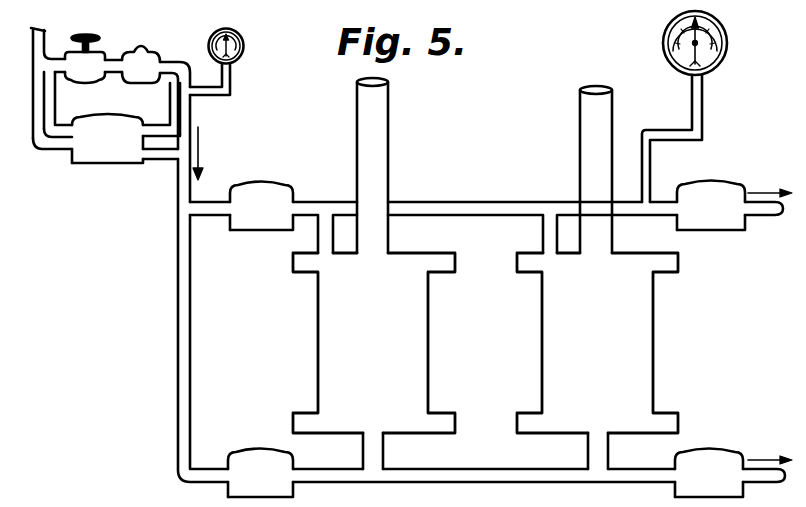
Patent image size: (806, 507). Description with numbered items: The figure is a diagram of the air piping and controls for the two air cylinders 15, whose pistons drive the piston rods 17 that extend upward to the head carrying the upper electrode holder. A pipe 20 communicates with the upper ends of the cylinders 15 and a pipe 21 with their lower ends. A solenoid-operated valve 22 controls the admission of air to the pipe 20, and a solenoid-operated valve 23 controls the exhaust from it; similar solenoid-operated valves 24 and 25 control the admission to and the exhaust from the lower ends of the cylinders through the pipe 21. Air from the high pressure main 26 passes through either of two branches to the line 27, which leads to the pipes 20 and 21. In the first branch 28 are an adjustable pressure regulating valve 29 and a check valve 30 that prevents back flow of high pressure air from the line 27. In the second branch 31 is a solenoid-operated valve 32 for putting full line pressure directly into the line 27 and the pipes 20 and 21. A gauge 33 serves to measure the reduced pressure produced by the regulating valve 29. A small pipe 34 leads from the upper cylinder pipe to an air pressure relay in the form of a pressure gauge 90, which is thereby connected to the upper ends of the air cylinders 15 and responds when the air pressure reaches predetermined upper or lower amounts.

The air cylinder 15 is at (485, 343).
The piston rod 17 is at (380, 113).
The pipe 20 is at (475, 205).
The pipe 21 is at (472, 472).
The solenoid-operated valve 22 is at (261, 206).
The solenoid-operated valve 23 is at (711, 206).
The solenoid-operated valve 24 is at (260, 473).
The solenoid-operated valve 25 is at (709, 473).
The high pressure main 26 is at (40, 37).
The line 27 is at (182, 178).
The branch 28 is at (50, 74).
The adjustable pressure regulating valve 29 is at (90, 57).
The check valve 30 is at (142, 50).
The second branch 31 is at (60, 147).
The solenoid-operated valve 32 is at (107, 138).
The gauge 33 is at (245, 52).
The small pipe 34 is at (703, 113).
The pressure gauge 90 is at (727, 33).